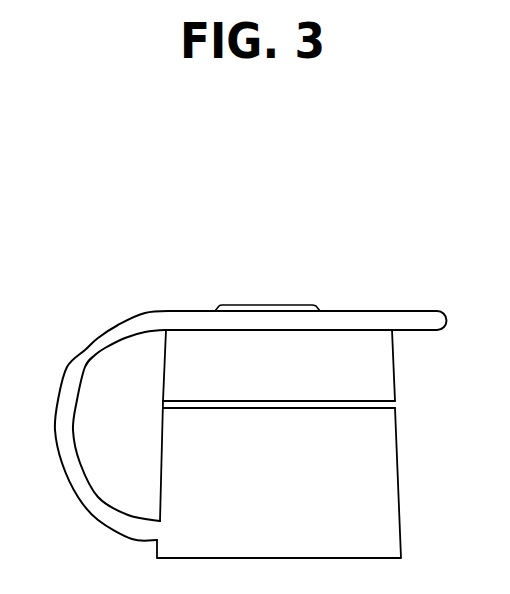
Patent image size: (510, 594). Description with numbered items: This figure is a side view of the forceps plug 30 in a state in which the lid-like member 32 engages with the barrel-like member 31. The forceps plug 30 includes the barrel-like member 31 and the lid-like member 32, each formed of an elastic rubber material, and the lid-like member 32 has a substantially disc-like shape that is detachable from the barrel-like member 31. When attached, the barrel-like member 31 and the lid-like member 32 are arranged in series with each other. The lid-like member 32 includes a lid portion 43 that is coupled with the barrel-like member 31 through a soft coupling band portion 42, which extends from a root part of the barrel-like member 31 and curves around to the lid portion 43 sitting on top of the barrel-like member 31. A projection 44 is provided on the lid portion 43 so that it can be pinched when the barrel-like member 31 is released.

The forceps plug 30 is at (296, 235).
The barrel-like member 31 is at (160, 464).
The lid-like member 32 is at (165, 374).
The soft coupling band portion 42 is at (91, 341).
The lid portion 43 is at (341, 310).
The projection 44 is at (417, 310).